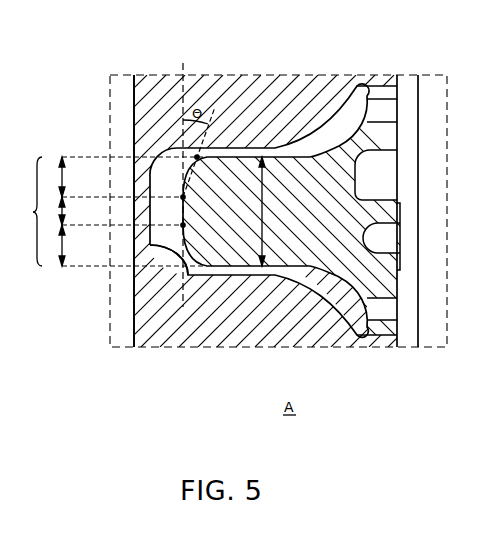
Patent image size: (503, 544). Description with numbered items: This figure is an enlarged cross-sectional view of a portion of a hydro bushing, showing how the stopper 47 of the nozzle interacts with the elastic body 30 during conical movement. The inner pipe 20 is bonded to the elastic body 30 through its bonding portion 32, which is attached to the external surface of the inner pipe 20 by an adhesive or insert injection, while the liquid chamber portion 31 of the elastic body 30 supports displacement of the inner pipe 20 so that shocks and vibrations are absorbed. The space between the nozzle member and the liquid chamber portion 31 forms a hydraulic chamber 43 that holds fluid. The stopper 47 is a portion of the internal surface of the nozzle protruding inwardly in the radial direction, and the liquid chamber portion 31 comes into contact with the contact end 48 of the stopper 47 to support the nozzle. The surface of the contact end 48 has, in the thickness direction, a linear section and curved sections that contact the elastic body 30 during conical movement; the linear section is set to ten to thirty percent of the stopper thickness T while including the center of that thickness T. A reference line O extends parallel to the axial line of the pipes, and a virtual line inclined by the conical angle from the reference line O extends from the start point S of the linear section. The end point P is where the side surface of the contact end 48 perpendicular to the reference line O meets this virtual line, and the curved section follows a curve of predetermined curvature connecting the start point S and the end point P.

The inner pipe 20 is at (124, 302).
The elastic body 30 is at (321, 80).
The liquid chamber portion 31 is at (162, 177).
The bonding portion 32 is at (133, 90).
The hydraulic chamber 43 is at (171, 247).
The stopper 47 is at (291, 232).
The contact end 48 is at (109, 211).
The reference line O is at (182, 177).
The end point P is at (244, 150).
The start point S is at (198, 158).
The thickness T is at (268, 211).